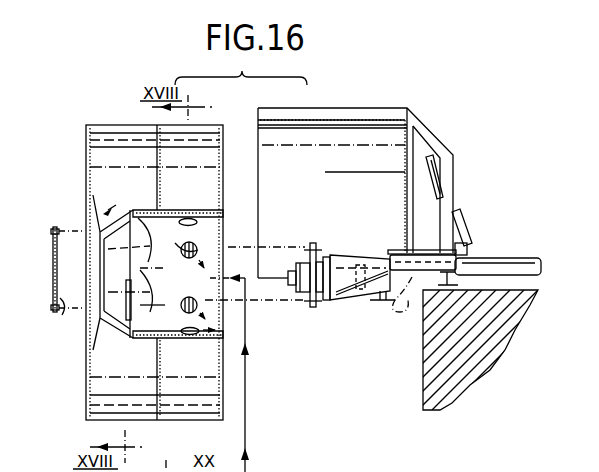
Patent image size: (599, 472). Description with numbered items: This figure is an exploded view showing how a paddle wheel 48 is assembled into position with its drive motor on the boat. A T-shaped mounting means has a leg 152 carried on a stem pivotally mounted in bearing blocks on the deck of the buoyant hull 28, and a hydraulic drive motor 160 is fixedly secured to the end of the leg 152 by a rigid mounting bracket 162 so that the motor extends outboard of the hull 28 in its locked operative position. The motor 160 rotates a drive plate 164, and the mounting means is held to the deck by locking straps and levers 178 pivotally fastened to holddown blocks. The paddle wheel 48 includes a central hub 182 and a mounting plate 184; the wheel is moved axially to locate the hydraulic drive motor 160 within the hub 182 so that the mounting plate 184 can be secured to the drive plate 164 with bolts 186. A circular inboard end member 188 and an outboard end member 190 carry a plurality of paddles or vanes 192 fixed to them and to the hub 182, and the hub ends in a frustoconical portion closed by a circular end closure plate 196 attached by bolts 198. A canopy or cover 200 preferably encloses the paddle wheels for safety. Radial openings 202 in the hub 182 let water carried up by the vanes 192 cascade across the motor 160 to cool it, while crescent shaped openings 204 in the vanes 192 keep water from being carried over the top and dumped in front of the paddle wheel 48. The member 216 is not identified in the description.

The buoyant hull 28 is at (426, 379).
The paddle wheel 48 is at (86, 370).
The leg 152 is at (518, 260).
The hydraulic drive motor 160 is at (362, 302).
The mounting bracket 162 is at (354, 257).
The drive plate 164 is at (314, 244).
The lever 178 is at (456, 231).
The hub 182 is at (148, 212).
The mounting plate 184 is at (147, 283).
The bolts 186 is at (305, 308).
The inboard end member 188 is at (223, 181).
The outboard end member 190 is at (88, 172).
The vanes 192 is at (95, 153).
The end closure plate 196 is at (62, 312).
The bolts 198 is at (68, 229).
The canopy 200 is at (400, 110).
The radial openings 202 is at (205, 248).
The crescent shaped openings 204 is at (180, 212).
The member 216 is at (292, 463).